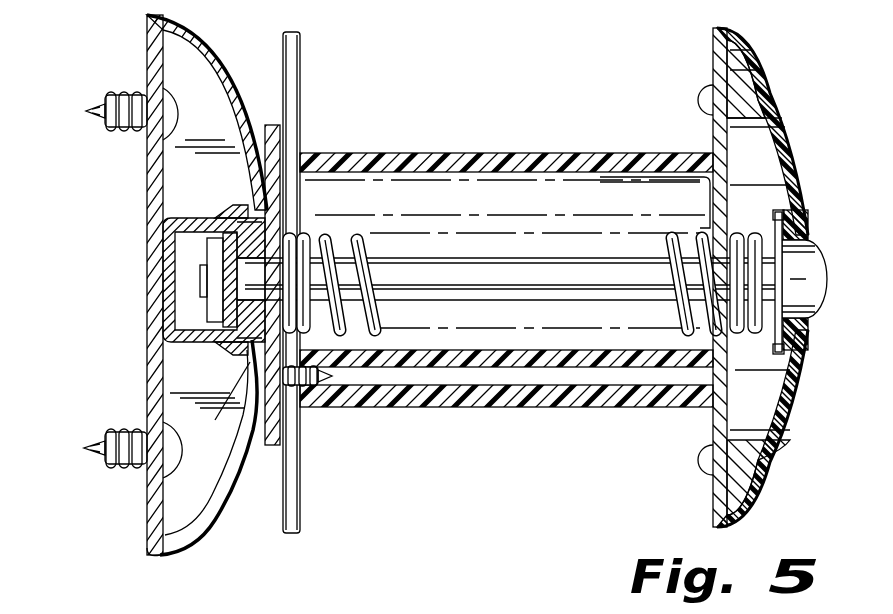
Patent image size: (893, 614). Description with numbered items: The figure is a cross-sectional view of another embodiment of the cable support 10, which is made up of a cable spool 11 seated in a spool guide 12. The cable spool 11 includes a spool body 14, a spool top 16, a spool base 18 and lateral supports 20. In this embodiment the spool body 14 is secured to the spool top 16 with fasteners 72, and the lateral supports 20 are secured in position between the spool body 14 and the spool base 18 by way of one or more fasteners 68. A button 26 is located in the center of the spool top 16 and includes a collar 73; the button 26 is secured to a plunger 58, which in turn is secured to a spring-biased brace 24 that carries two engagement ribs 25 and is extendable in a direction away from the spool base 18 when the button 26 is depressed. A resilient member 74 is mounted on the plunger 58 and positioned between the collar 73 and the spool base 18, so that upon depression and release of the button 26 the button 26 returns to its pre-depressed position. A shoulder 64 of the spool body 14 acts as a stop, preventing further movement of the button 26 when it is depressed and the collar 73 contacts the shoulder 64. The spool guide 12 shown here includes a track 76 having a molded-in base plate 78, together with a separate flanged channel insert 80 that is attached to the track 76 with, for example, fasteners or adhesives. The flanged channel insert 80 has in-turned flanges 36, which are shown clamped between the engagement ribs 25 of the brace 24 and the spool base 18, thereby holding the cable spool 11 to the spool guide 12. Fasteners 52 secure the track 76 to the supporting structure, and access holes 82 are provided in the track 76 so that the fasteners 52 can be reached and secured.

The cable support 10 is at (594, 54).
The cable spool 11 is at (524, 542).
The spool guide 12 is at (391, 307).
The spool body 14 is at (405, 158).
The spool top 16 is at (653, 307).
The spool base 18 is at (270, 445).
The lateral supports 20 is at (300, 72).
The brace 24 is at (190, 313).
The engagement ribs 25 is at (210, 218).
The button 26 is at (822, 258).
The in-turned flanges 36 is at (217, 212).
The fasteners 52 is at (100, 108).
The plunger 58 is at (536, 283).
The shoulder 64 is at (730, 212).
The fasteners 68 is at (327, 385).
The fasteners 72 is at (706, 105).
The collar 73 is at (765, 343).
The resilient member 74 is at (665, 232).
The track 76 is at (228, 50).
The base plate 78 is at (152, 400).
The flanged channel insert 80 is at (221, 291).
The access holes 82 is at (233, 110).